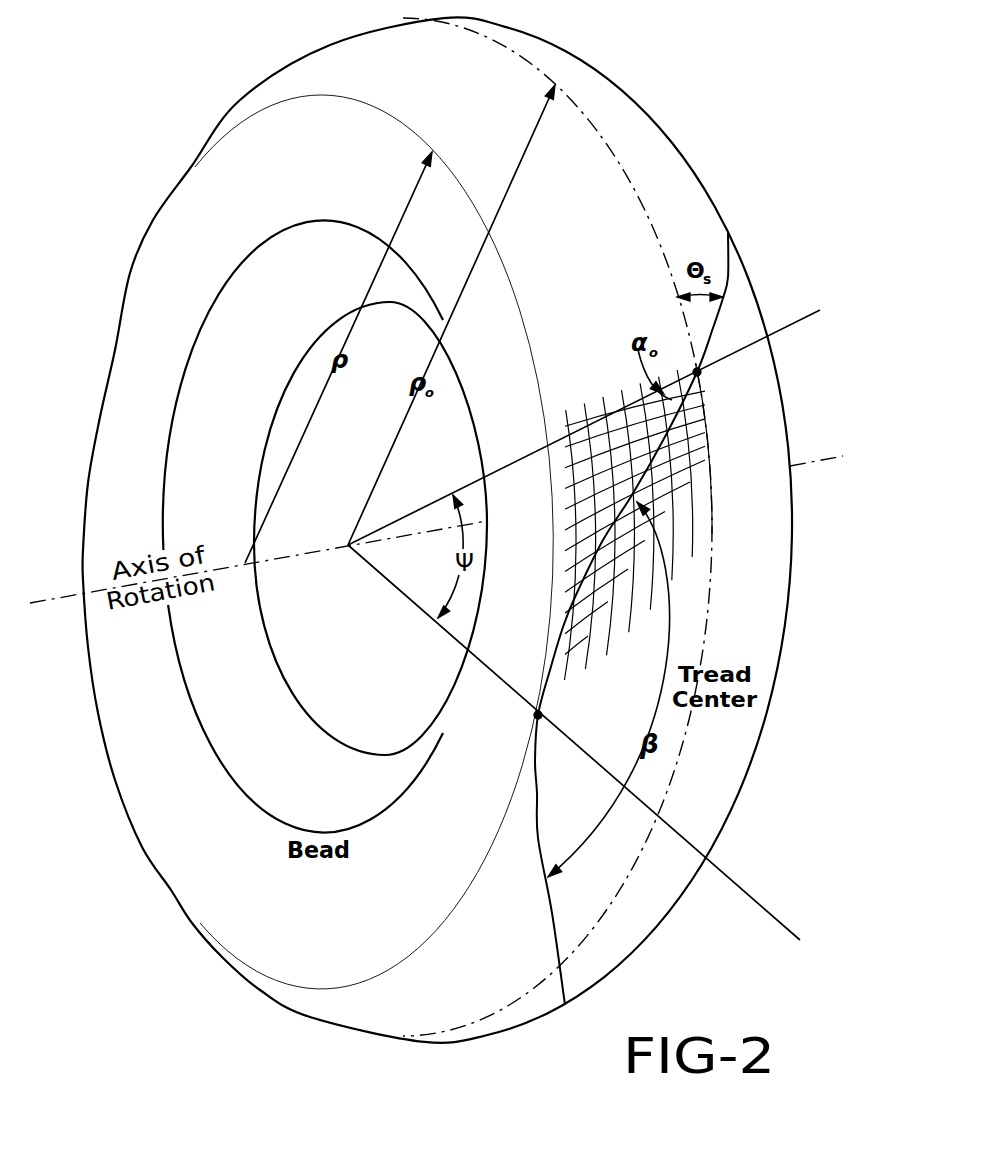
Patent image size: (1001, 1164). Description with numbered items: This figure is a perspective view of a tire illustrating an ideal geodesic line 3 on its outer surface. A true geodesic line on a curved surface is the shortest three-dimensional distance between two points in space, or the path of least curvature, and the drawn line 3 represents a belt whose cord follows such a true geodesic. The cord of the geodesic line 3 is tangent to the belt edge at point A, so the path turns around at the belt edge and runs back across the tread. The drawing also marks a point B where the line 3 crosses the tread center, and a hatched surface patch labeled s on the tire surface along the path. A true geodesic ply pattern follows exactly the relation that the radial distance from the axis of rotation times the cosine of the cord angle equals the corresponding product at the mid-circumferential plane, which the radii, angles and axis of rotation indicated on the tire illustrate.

The geodesic line 3 is at (560, 641).
The point A is at (541, 713).
The point B on the meridian curve at the tread center B is at (699, 375).
The hatched surface patch (arc length coordinate s) on the tire s is at (639, 521).